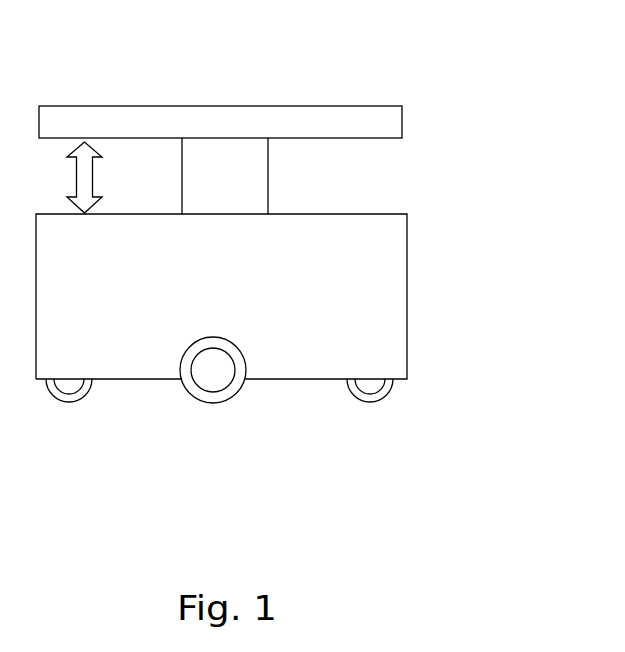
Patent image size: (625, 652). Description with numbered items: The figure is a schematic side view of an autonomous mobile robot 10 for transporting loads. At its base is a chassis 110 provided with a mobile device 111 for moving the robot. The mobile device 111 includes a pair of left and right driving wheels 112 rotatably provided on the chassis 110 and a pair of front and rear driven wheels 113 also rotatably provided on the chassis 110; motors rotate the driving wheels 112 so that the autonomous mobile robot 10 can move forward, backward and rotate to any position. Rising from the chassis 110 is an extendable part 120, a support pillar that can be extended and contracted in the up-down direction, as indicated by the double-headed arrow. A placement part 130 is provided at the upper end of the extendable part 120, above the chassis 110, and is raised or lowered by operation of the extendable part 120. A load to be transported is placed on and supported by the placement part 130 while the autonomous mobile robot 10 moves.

The autonomous mobile robot 10 is at (432, 26).
The chassis 110 is at (407, 240).
The mobile device 111 is at (266, 412).
The driving wheels 112 is at (190, 398).
The driven wheels 113 is at (63, 402).
The extendable part 120 is at (268, 182).
The placement part 130 is at (402, 122).